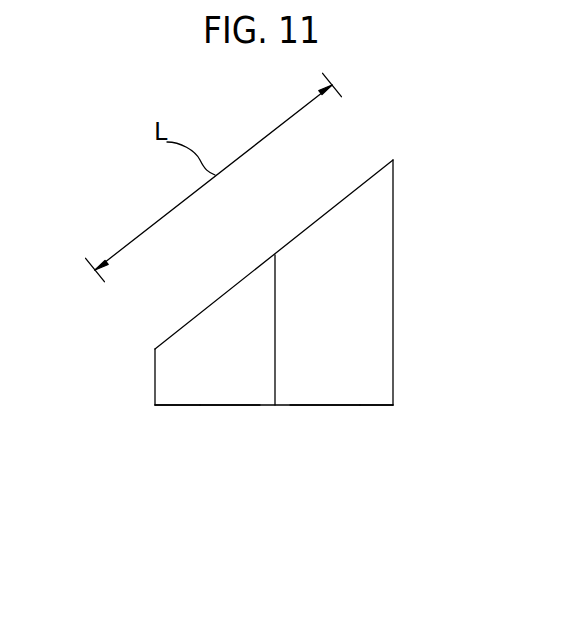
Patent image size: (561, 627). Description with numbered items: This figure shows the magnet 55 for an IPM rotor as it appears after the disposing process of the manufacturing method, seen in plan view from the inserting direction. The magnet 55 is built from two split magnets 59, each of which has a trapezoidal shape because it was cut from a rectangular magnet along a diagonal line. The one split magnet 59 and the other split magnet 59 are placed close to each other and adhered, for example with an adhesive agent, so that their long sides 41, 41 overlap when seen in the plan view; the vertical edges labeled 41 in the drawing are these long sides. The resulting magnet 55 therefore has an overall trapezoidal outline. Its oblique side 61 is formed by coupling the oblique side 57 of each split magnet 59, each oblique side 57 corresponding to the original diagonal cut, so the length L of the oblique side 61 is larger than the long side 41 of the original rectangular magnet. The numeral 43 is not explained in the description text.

The long side 41 is at (155, 372).
The corner portion 43 is at (190, 405).
The magnet for an IPM rotor 55 is at (274, 494).
The oblique side 57 is at (217, 300).
The split magnet 59 is at (220, 393).
The oblique side 61 is at (327, 208).